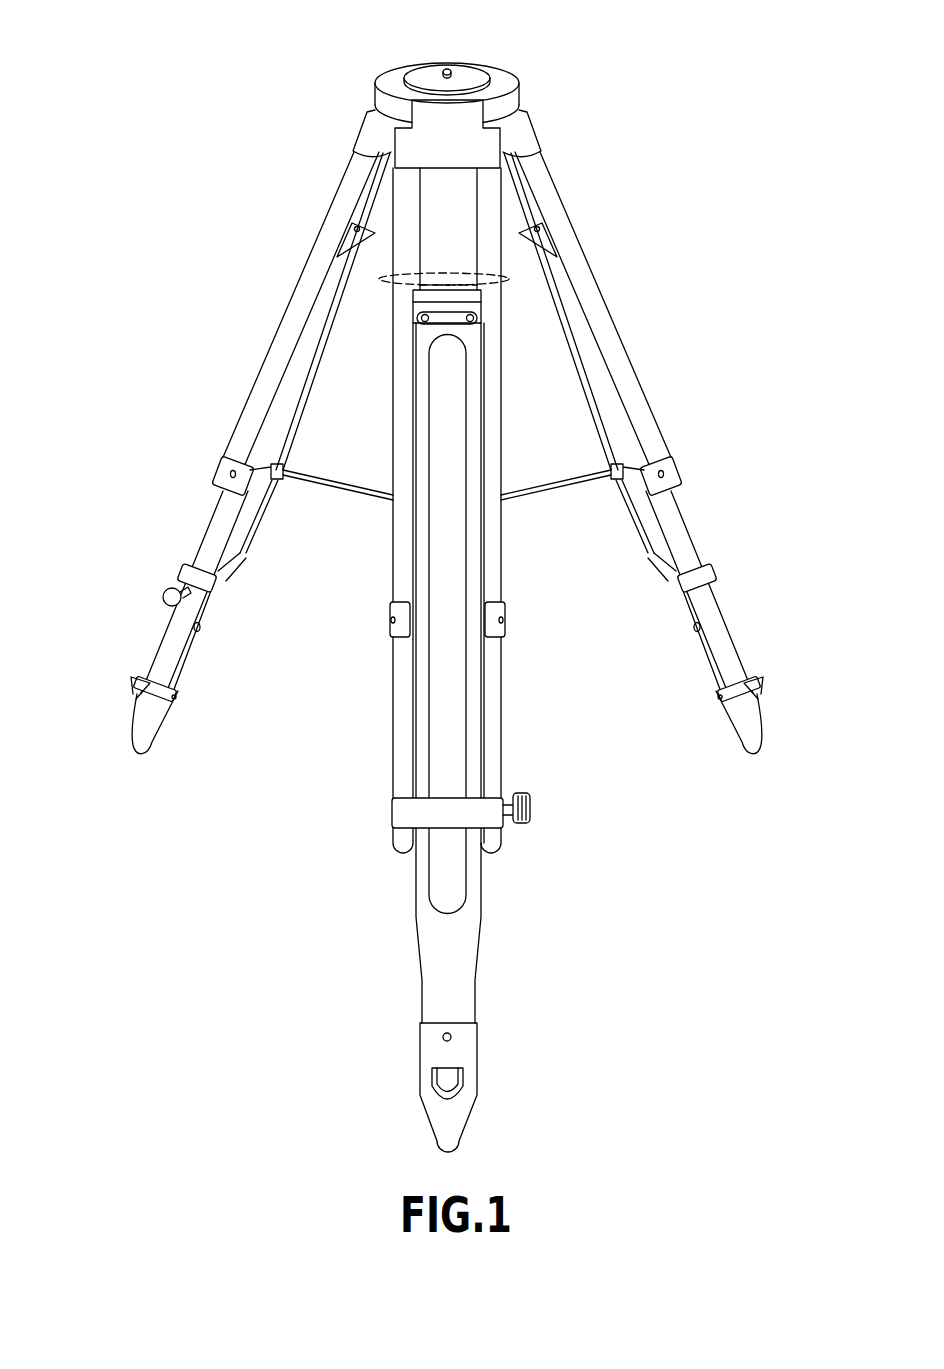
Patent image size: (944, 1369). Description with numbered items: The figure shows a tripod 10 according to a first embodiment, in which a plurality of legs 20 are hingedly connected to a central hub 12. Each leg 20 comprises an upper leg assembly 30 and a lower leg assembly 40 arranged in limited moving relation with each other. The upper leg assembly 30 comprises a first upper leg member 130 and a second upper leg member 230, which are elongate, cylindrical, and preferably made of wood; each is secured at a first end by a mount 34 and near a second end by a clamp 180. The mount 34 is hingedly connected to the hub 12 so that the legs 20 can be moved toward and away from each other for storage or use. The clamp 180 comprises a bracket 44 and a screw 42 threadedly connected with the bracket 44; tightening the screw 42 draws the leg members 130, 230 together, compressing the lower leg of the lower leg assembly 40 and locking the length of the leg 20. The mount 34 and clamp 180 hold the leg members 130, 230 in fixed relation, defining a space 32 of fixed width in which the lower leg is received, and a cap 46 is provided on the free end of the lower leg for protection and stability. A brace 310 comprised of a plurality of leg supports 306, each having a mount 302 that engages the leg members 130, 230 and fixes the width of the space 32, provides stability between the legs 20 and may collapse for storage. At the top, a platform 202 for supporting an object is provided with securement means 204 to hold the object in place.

The tripod 10 is at (446, 585).
The hub 12 is at (499, 76).
The leg 20 is at (633, 293).
The upper leg assembly 30 is at (515, 273).
The space 32 is at (436, 250).
The mount 34 is at (463, 171).
The lower leg assembly 40 is at (488, 882).
The screw 42 is at (165, 603).
The bracket 44 is at (243, 564).
The cap 46 is at (135, 718).
The first upper leg member 130 is at (400, 342).
The clamp 180 is at (181, 584).
The platform 202 is at (420, 72).
The securement means 204 is at (449, 67).
The second upper leg member 230 is at (494, 362).
The mount 302 is at (231, 463).
The leg support 306 is at (305, 472).
The brace 310 is at (320, 511).